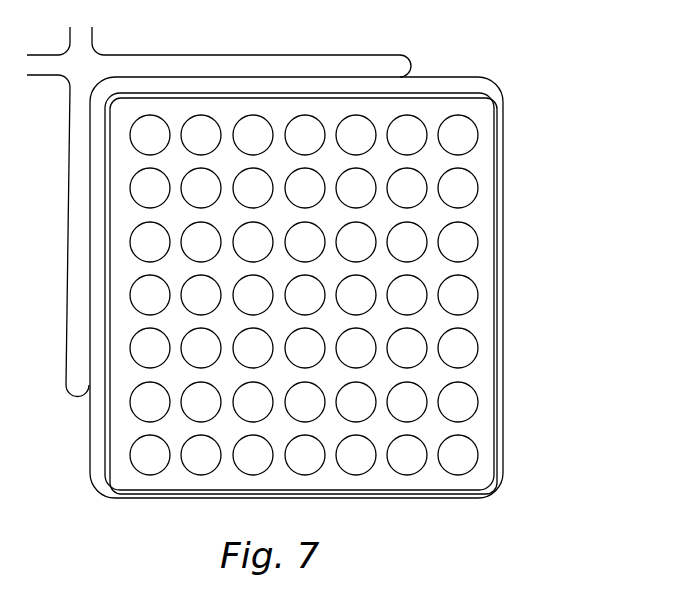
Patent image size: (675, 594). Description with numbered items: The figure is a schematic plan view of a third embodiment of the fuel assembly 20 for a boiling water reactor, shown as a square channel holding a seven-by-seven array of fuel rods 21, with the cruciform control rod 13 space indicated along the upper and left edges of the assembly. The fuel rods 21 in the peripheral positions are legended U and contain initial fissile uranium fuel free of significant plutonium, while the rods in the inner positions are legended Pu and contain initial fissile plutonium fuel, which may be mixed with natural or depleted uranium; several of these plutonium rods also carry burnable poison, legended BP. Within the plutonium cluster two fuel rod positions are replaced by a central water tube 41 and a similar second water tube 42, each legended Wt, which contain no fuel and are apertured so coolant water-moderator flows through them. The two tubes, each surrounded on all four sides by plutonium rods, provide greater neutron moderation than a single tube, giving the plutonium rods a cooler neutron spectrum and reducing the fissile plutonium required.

The control rod 13 is at (412, 64).
The fuel assembly 20 is at (507, 146).
The fuel rods 21 is at (361, 295).
The water tube 41 is at (321, 279).
The second water tube 42 is at (360, 367).